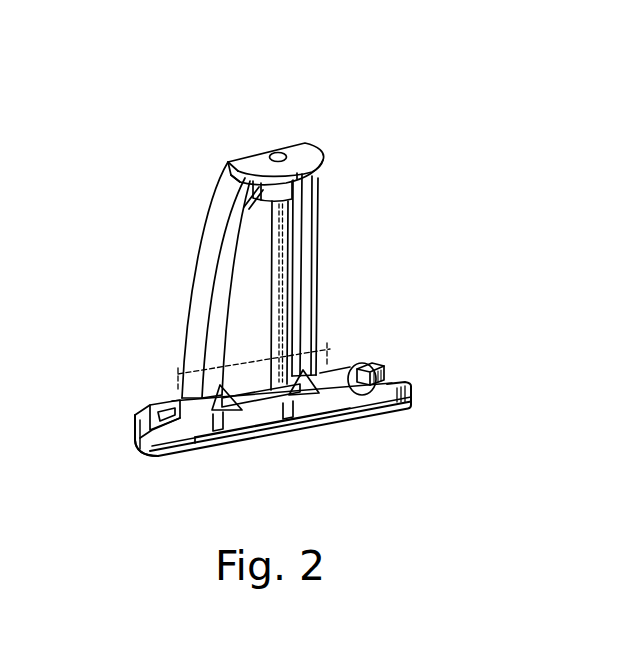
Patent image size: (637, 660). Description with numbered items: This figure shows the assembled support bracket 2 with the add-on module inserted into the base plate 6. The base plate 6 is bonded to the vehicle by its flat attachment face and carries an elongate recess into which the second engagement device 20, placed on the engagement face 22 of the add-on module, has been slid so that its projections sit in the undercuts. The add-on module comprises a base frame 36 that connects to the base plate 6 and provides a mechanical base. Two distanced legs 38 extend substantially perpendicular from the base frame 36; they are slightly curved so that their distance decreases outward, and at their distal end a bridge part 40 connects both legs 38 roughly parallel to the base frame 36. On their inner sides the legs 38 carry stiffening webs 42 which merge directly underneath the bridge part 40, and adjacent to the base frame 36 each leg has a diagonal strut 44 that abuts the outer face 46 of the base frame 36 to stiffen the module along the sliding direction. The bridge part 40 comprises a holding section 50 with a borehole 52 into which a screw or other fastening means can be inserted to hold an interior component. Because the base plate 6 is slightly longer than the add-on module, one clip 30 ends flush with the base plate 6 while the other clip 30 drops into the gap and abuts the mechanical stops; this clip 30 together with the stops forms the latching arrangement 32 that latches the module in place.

The support bracket 2 is at (303, 103).
The base plate 6 is at (176, 452).
The second engagement device 20 is at (350, 442).
The engagement face 22 is at (246, 460).
The clip 30 is at (140, 412).
The latching arrangement 32 is at (372, 366).
The base frame 36 is at (180, 374).
The legs 38 is at (200, 266).
The bridge part 40 is at (216, 167).
The stiffening webs 42 is at (290, 226).
The diagonal strut 44 is at (281, 393).
The outer face 46 is at (244, 385).
The holding section 50 is at (315, 156).
The borehole 52 is at (275, 153).